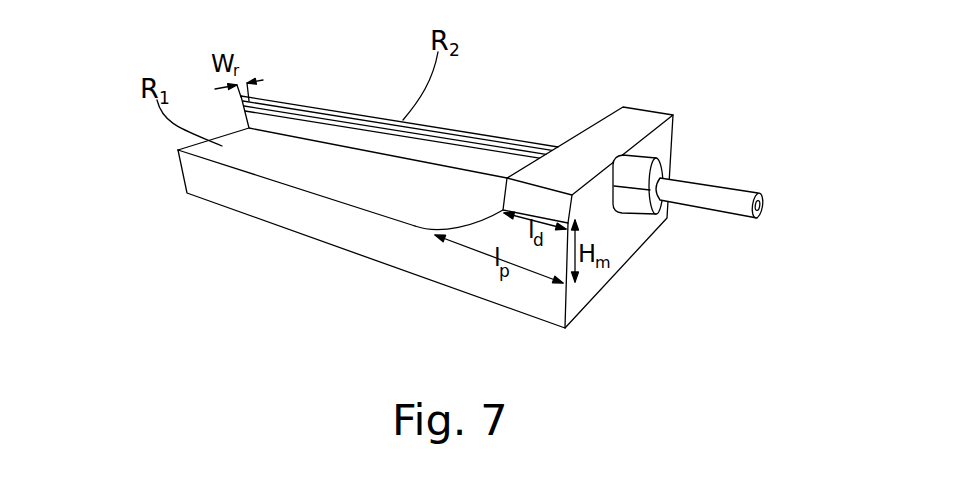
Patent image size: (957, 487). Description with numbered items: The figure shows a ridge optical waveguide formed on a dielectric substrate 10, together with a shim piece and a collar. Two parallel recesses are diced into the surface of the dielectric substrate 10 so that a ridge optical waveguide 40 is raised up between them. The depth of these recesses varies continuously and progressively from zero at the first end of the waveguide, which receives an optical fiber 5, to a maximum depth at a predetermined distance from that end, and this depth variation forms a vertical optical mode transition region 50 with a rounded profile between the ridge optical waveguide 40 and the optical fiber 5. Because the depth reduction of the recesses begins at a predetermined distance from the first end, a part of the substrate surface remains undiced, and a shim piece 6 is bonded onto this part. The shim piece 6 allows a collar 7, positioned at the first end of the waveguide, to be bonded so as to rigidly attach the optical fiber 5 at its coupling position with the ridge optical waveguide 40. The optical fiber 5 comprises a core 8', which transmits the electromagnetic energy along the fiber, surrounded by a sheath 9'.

The dielectric substrate 10 is at (293, 232).
The ridge optical waveguide 40 is at (282, 103).
The vertical optical mode transition region 50 is at (470, 223).
The shim piece 6 is at (627, 130).
The collar 7 is at (632, 206).
The optical fiber 5 is at (700, 180).
The core 8' is at (794, 236).
The sheath 9' is at (794, 162).